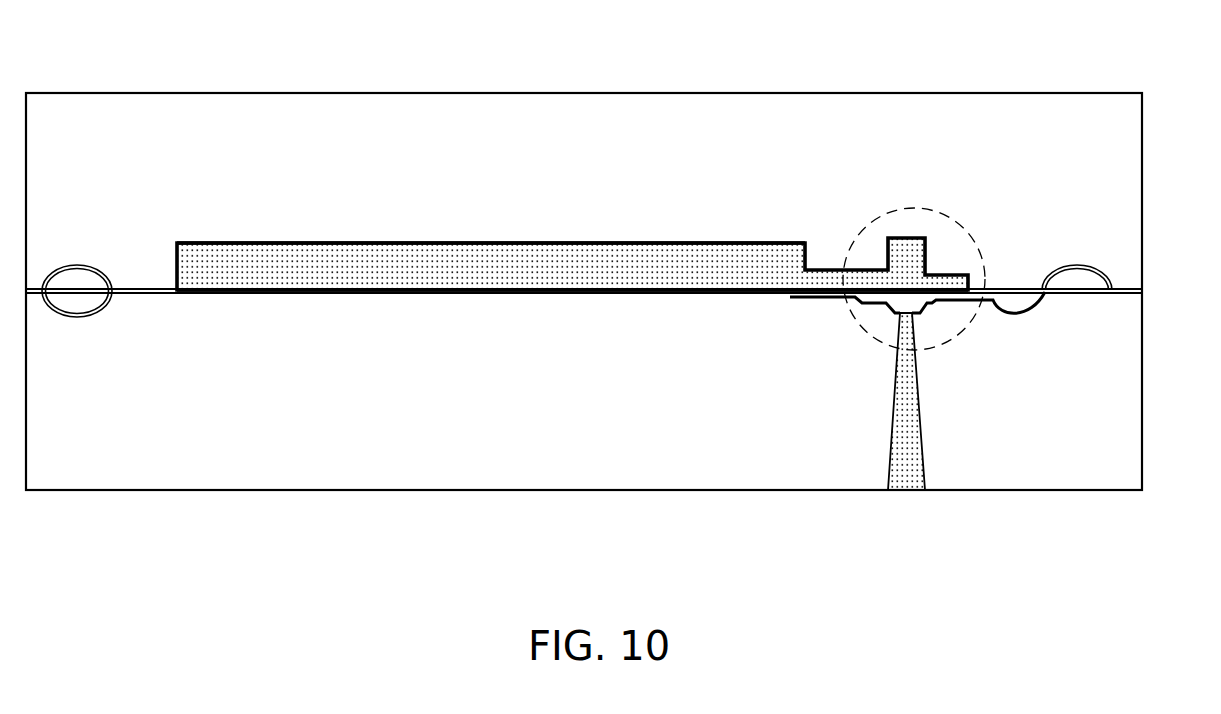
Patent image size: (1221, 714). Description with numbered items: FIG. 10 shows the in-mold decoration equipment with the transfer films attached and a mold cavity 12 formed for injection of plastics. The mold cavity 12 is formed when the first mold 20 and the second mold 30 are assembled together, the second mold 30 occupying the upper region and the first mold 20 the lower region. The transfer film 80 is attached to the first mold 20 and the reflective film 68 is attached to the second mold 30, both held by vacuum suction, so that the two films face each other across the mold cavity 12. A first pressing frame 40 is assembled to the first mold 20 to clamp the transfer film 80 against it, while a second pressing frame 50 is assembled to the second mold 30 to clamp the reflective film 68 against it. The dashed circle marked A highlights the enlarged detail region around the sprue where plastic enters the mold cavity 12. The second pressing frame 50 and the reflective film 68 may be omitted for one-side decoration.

The mold cavity 12 is at (704, 270).
The first mold 20 is at (485, 448).
The second mold 30 is at (483, 145).
The first pressing frame 40 is at (1015, 305).
The second pressing frame 50 is at (1077, 282).
The reflective film 68 is at (278, 244).
The transfer film 80 is at (276, 296).
The region A is at (917, 208).